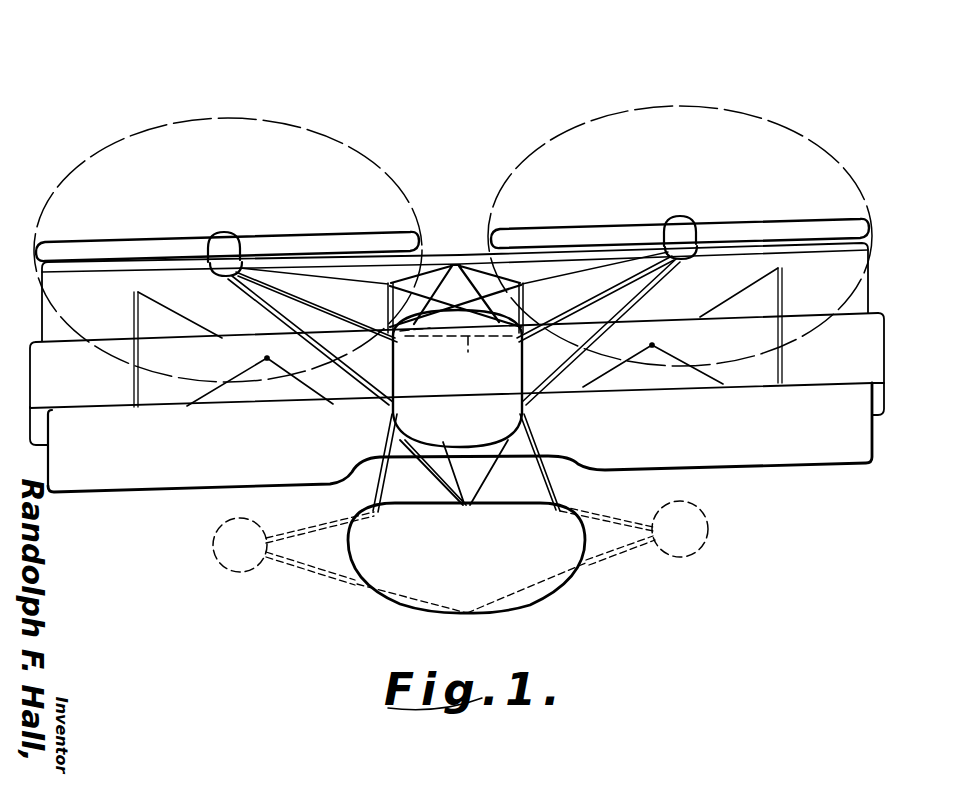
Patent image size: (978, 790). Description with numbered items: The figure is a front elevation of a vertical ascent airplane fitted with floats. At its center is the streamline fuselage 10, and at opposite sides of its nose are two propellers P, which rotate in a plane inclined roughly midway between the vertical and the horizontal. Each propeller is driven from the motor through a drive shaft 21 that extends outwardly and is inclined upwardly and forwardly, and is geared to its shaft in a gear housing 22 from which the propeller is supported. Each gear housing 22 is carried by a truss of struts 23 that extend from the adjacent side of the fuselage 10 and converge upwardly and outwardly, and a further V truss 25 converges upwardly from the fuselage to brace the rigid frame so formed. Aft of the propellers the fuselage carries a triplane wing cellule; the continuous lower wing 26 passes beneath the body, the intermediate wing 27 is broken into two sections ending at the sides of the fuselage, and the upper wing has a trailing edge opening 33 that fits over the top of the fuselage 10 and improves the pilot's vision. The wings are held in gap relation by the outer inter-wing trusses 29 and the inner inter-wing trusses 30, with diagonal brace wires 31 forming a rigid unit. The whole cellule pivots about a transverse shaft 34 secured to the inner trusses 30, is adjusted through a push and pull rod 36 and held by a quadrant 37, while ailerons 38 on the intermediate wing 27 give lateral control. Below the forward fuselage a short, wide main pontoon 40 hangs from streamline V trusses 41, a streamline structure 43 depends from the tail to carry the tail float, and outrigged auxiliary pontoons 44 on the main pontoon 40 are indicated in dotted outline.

The propeller P is at (358, 238).
The fuselage 10 is at (457, 378).
The drive shaft 21 is at (267, 297).
The gear housing 22 is at (222, 274).
The strut 23 is at (362, 332).
The V truss 25 is at (466, 264).
The lower wing 26 is at (805, 458).
The intermediate wing 27 is at (865, 335).
The outer inter-wing truss 29 is at (134, 385).
The inner inter-wing truss 30 is at (384, 296).
The brace wire 31 is at (733, 303).
The opening 33 is at (442, 318).
The shaft 34 is at (458, 356).
The push and pull rod 36 is at (860, 296).
The quadrant 37 is at (302, 378).
The aileron 38 is at (874, 390).
The main pontoon 40 is at (545, 600).
The streamline V truss 41 is at (388, 483).
The streamline structure 43 is at (462, 471).
The auxiliary pontoon 44 is at (253, 567).